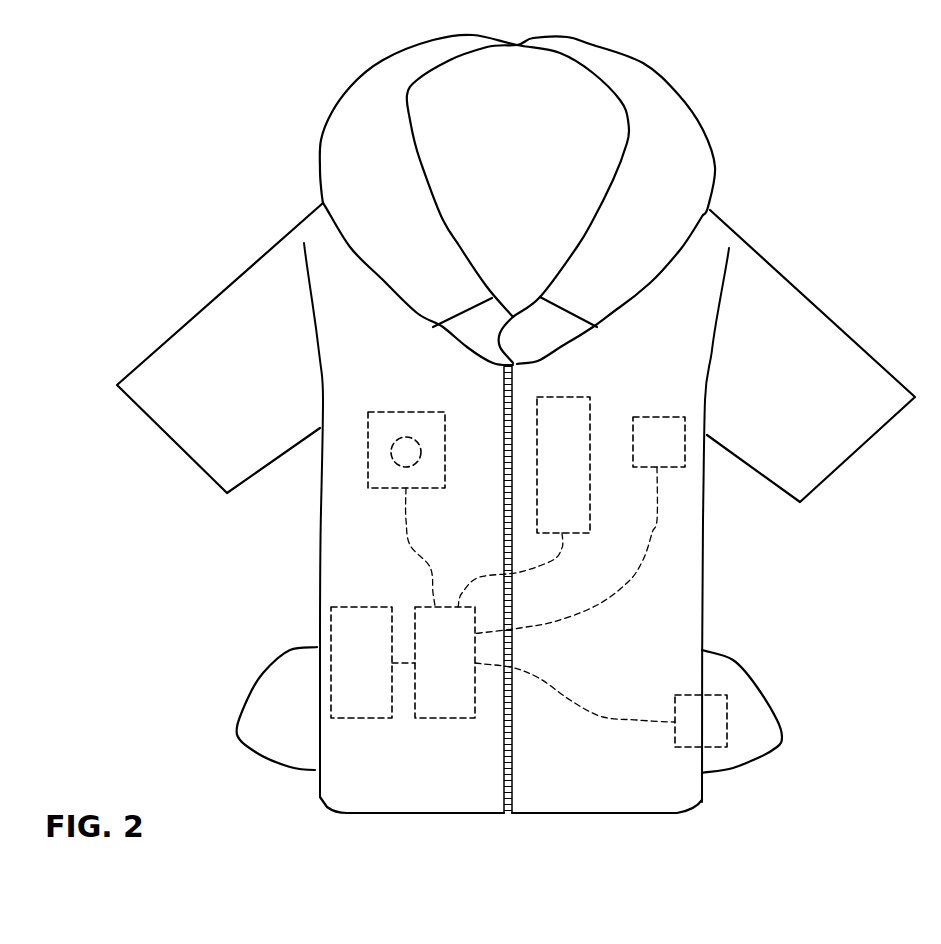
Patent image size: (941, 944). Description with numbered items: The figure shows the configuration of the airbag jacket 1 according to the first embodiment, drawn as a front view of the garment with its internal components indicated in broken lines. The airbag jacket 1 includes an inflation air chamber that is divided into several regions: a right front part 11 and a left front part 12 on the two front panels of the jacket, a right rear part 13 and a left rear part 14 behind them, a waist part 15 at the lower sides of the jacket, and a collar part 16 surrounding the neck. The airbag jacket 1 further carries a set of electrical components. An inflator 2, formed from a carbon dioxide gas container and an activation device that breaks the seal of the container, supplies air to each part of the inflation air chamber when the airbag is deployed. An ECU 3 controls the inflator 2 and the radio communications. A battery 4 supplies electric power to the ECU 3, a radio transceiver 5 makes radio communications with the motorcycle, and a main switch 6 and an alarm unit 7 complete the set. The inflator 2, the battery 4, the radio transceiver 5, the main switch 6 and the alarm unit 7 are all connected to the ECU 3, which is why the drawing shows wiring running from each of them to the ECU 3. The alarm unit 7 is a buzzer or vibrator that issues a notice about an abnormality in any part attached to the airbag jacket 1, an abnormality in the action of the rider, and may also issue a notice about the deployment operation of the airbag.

The airbag jacket 1 is at (832, 442).
The inflator 2 is at (573, 403).
The ECU 3 is at (448, 710).
The battery 4 is at (728, 707).
The radio transceiver 5 is at (357, 710).
The main switch 6 is at (407, 407).
The alarm unit 7 is at (680, 428).
The right front part 11 is at (350, 528).
The left front part 12 is at (673, 533).
The right rear part 13 is at (348, 587).
The left rear part 14 is at (673, 590).
The waist part 15 is at (265, 737).
The collar part 16 is at (688, 125).